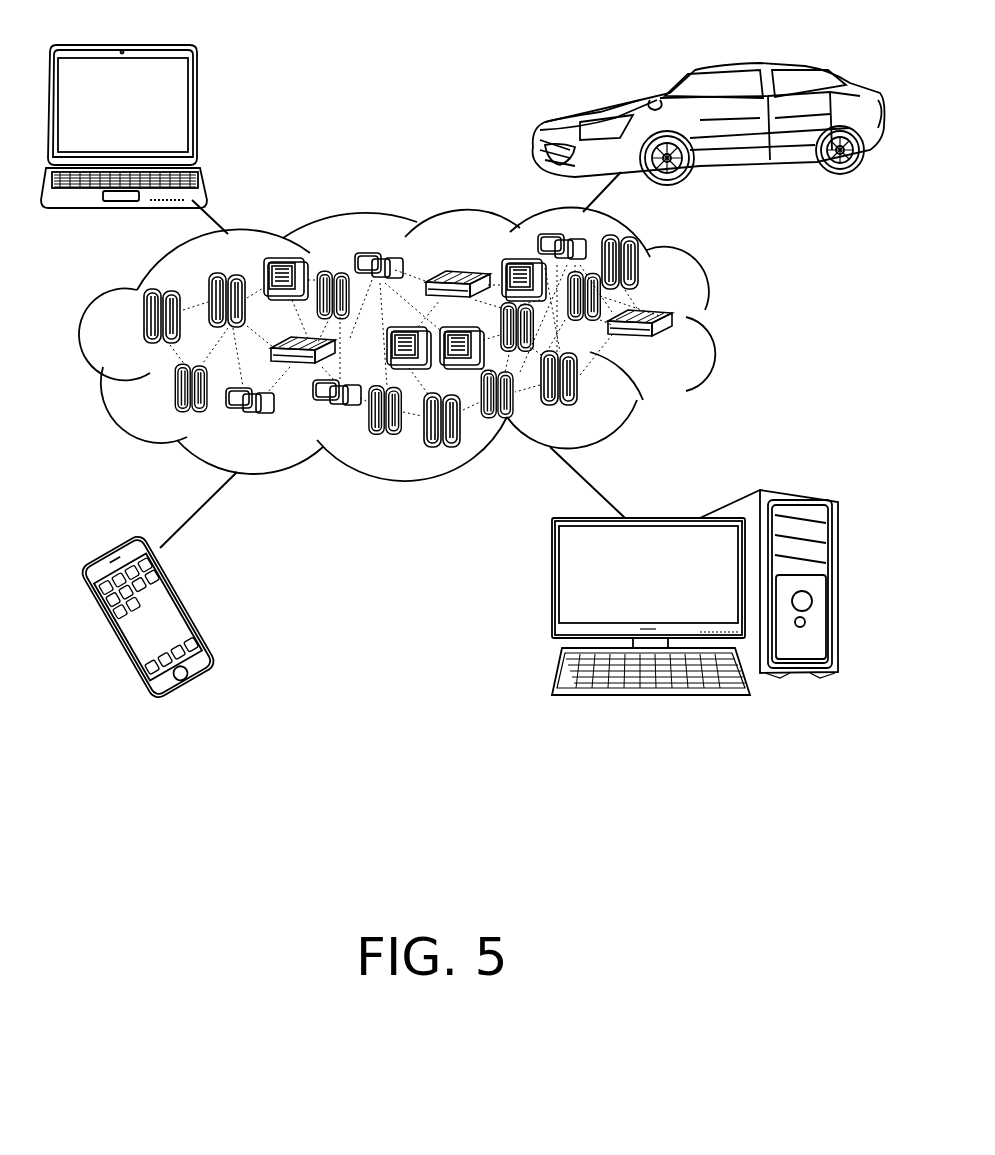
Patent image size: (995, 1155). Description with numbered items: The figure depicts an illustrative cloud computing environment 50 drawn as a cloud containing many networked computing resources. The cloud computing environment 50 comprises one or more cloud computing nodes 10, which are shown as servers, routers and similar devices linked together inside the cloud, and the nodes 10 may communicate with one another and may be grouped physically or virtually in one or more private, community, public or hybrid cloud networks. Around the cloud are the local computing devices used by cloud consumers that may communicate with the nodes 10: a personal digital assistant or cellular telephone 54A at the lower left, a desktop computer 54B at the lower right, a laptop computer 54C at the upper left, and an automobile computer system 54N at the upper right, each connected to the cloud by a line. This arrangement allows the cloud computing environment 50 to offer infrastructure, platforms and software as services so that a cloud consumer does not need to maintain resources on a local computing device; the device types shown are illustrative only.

The cloud computing node 10 is at (668, 338).
The cloud computing environment 50 is at (722, 327).
The personal digital assistant or cellular telephone 54A is at (172, 607).
The desktop computer 54B is at (738, 502).
The laptop computer 54C is at (178, 124).
The automobile computer system 54N is at (534, 130).